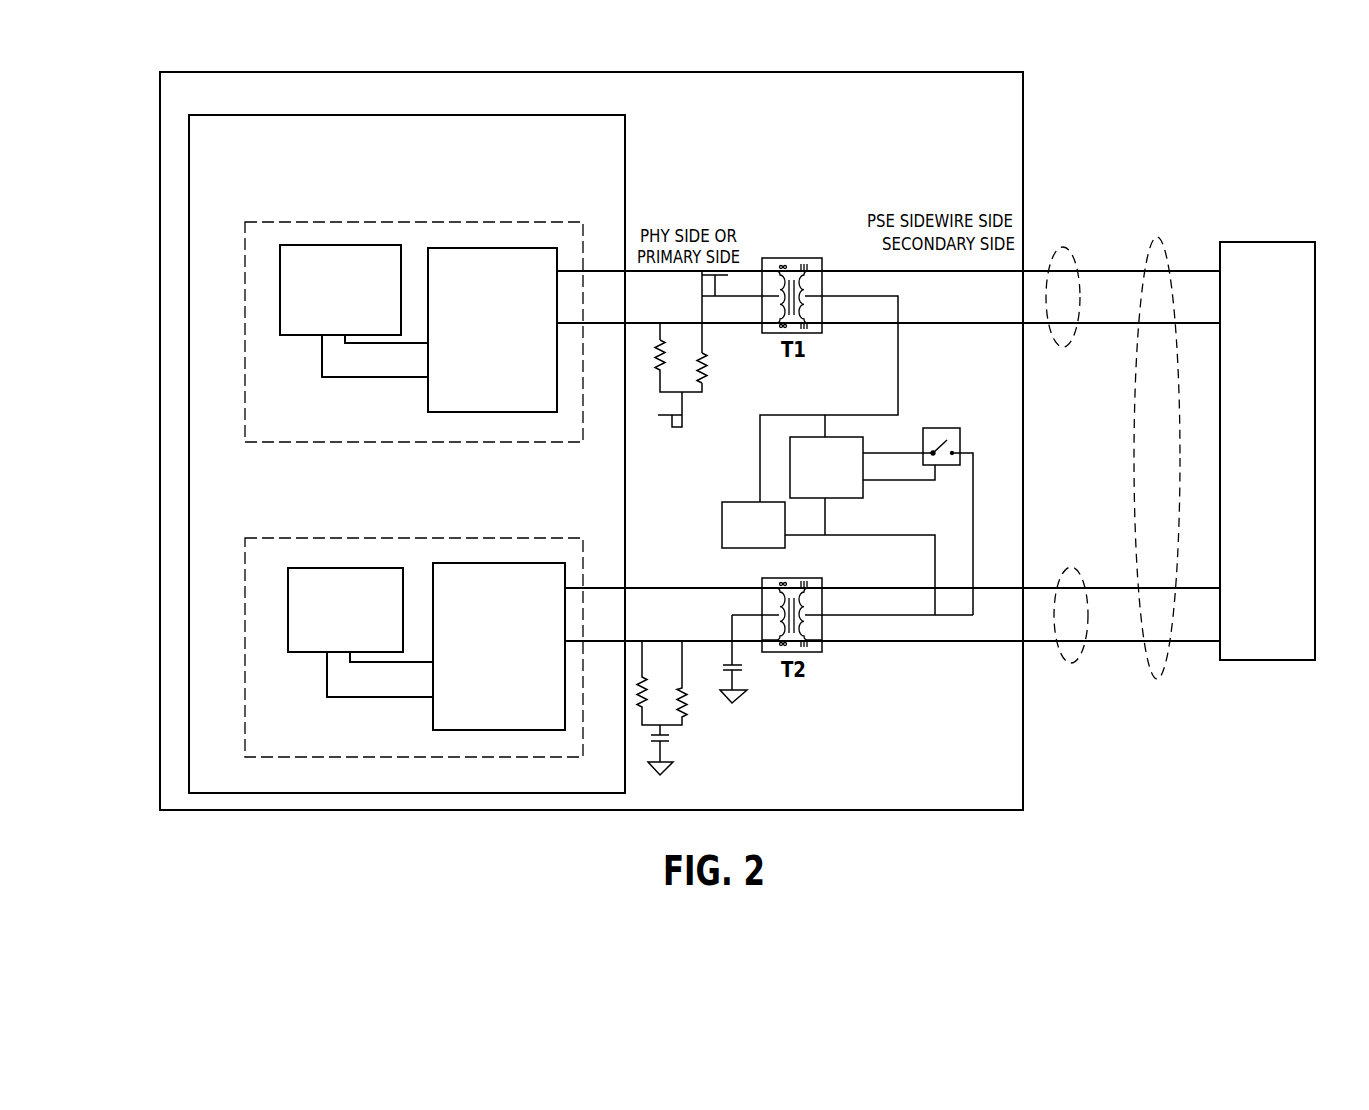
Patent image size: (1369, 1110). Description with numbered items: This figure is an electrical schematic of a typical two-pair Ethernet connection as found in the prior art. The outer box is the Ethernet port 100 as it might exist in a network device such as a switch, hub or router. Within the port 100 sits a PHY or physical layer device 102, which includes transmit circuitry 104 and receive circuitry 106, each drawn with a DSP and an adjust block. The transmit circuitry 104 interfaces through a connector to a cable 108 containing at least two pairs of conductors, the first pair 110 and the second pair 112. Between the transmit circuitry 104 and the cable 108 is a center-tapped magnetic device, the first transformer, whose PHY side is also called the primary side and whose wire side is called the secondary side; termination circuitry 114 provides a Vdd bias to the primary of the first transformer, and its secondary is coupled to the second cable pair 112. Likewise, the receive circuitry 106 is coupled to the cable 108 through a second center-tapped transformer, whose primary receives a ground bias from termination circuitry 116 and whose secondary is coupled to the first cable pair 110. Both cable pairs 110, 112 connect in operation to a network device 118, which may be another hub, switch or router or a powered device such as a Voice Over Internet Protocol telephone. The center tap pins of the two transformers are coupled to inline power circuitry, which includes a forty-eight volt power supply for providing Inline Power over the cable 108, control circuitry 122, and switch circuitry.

The Ethernet port 100 is at (1023, 512).
The PHY or physical layer device 102 is at (625, 148).
The transmit circuitry 104 is at (268, 443).
The receive circuitry 106 is at (355, 759).
The cable 108 is at (1158, 237).
The Pair 1-2 110 is at (1080, 657).
The Pair 3-6 112 is at (1067, 247).
The termination circuitry 114 is at (705, 393).
The termination circuitry 116 is at (685, 727).
The network device 118 is at (1287, 418).
The control circuitry 122 is at (860, 495).